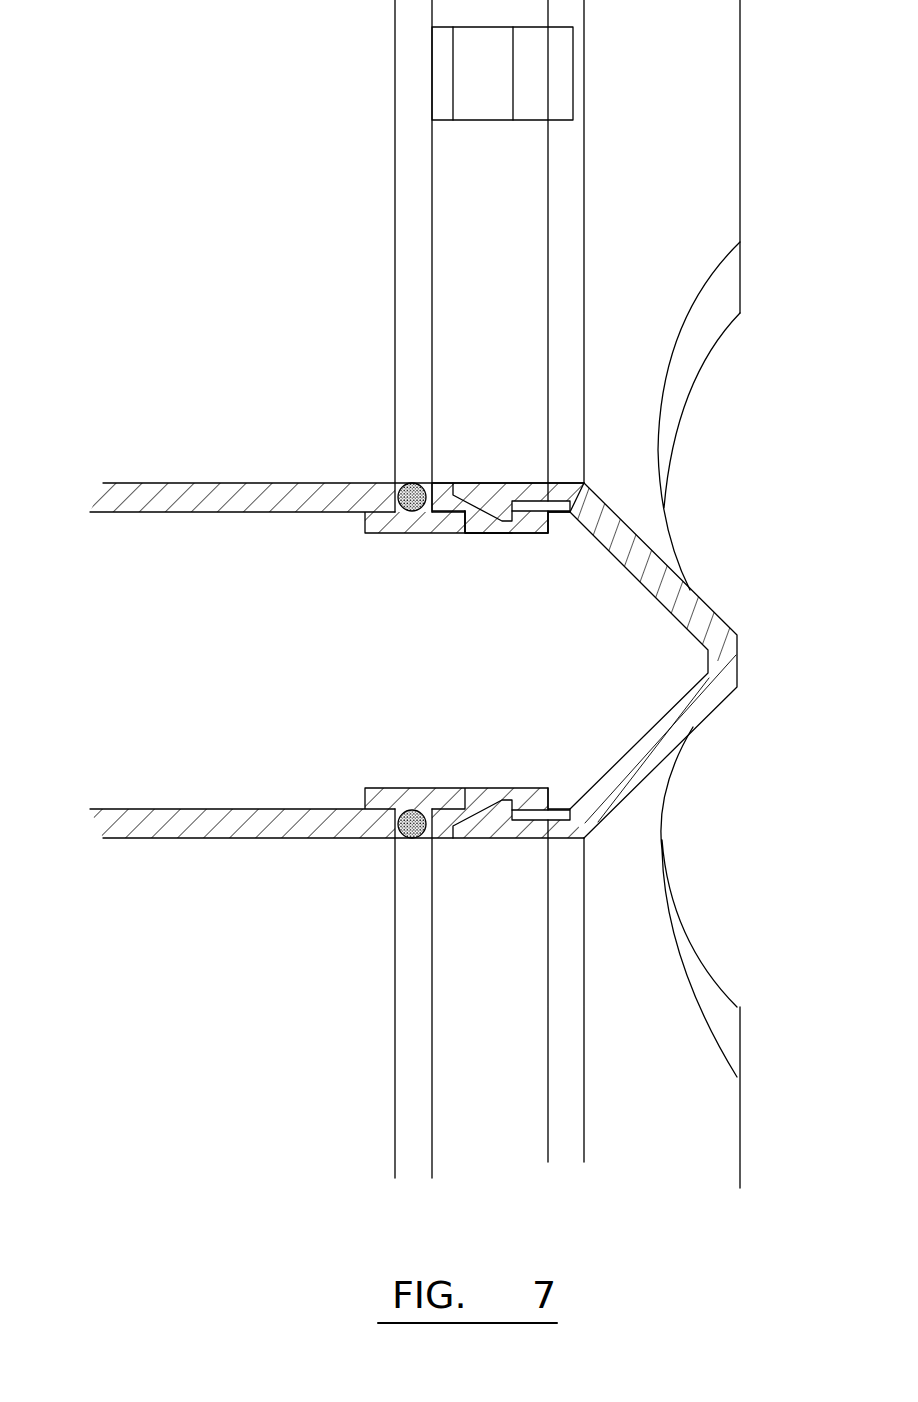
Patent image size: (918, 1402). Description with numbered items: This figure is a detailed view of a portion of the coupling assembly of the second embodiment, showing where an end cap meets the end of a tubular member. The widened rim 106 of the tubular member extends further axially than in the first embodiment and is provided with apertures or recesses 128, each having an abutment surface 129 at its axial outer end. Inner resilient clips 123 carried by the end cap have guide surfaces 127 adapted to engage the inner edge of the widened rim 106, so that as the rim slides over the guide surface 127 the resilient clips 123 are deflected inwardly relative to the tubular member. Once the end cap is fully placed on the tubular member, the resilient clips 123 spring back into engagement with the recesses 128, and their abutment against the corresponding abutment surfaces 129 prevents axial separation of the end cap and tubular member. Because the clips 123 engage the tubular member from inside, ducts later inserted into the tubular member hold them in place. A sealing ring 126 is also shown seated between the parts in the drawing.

The widened rim 106 is at (393, 523).
The inner resilient clip 123 is at (497, 490).
The O-ring seal 126 is at (400, 485).
The guide surface 127 is at (468, 507).
The recess 128 is at (482, 535).
The abutment surface 129 is at (508, 535).